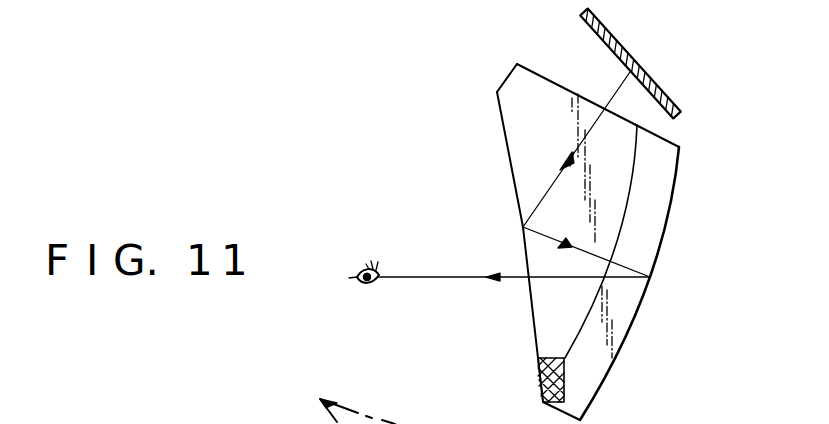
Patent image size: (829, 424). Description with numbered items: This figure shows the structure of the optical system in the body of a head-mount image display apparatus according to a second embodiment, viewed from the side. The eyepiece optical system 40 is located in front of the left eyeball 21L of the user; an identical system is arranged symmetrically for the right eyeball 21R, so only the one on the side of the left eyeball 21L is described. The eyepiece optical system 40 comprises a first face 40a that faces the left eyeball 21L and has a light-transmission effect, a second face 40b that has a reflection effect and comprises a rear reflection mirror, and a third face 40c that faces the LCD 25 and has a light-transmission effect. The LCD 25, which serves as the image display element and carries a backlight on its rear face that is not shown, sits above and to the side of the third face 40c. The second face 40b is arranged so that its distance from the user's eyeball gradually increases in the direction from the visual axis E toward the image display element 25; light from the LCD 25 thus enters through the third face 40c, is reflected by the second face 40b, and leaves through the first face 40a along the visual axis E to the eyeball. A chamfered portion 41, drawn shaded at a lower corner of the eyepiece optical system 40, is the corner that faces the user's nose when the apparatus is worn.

The LCD 25 is at (590, 30).
The eyepiece optical system 40 is at (589, 242).
The first face 40a is at (534, 300).
The second face 40b is at (656, 253).
The third face 40c is at (626, 119).
The chamfered portion 41 is at (540, 369).
The visual axis E is at (428, 276).
The left eyeball 21L is at (359, 286).
The right eyeball 21R is at (368, 276).